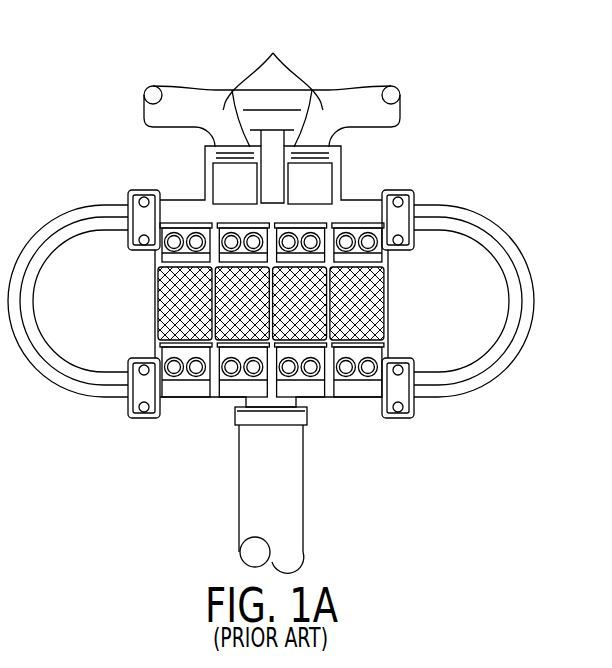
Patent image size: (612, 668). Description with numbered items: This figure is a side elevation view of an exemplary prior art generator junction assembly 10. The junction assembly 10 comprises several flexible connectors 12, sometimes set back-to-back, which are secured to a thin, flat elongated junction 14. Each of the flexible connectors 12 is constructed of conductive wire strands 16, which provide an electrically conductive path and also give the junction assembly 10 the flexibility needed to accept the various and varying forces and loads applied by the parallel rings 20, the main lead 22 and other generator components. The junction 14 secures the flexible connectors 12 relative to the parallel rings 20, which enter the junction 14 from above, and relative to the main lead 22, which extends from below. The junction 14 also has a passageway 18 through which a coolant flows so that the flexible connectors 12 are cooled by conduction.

The junction assembly 10 is at (419, 69).
The flexible connectors 12 is at (186, 228).
The junction 14 is at (207, 191).
The conductive wire strands 16 is at (386, 306).
The passageway 18 is at (73, 389).
The parallel rings 20 is at (273, 53).
The main lead 22 is at (253, 492).